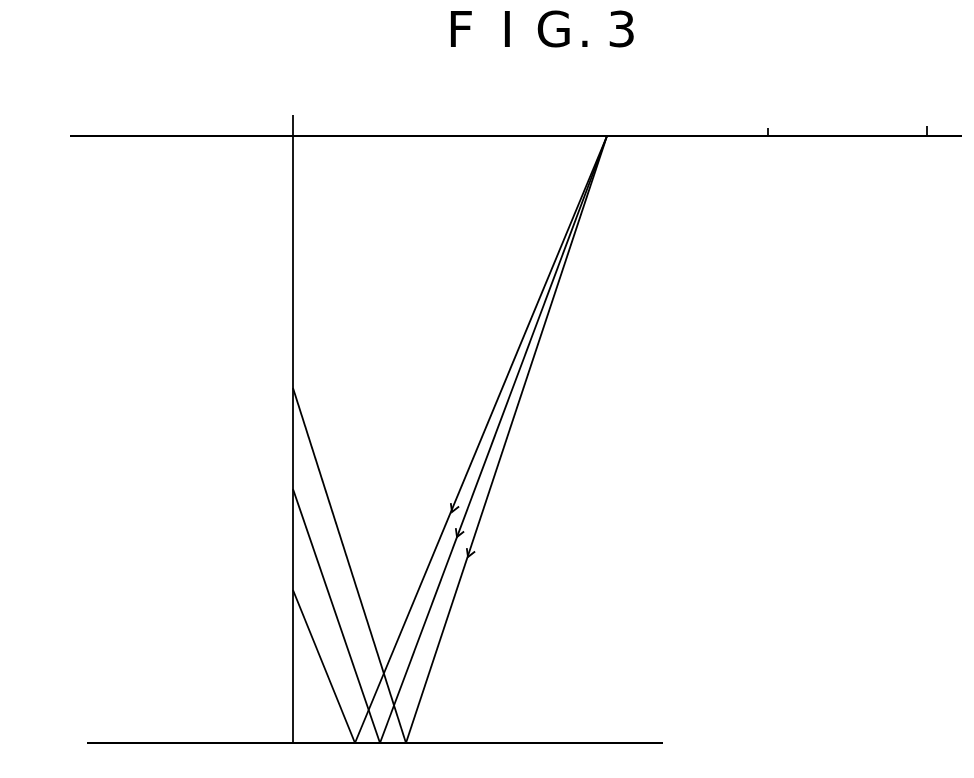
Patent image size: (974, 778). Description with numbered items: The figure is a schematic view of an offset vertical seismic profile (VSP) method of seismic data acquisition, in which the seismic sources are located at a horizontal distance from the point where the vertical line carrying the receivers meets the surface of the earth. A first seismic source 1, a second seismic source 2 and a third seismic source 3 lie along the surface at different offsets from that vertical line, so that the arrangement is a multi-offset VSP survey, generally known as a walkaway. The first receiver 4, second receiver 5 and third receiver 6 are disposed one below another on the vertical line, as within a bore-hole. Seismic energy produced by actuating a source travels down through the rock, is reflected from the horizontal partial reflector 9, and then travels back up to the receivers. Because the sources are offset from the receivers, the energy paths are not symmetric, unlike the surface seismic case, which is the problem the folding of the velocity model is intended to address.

The first seismic source 1 is at (607, 136).
The second seismic source 2 is at (767, 117).
The third seismic source 3 is at (926, 116).
The first receiver 4 is at (293, 388).
The second receiver 5 is at (293, 489).
The third receiver 6 is at (293, 590).
The first horizontal partial reflector 9 is at (360, 743).